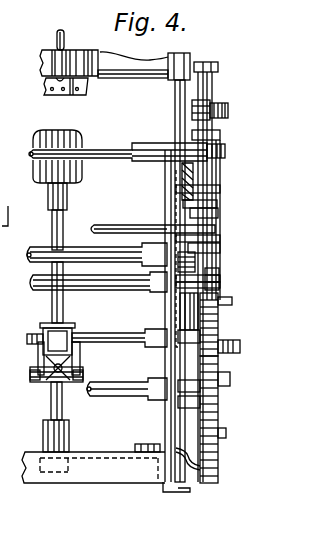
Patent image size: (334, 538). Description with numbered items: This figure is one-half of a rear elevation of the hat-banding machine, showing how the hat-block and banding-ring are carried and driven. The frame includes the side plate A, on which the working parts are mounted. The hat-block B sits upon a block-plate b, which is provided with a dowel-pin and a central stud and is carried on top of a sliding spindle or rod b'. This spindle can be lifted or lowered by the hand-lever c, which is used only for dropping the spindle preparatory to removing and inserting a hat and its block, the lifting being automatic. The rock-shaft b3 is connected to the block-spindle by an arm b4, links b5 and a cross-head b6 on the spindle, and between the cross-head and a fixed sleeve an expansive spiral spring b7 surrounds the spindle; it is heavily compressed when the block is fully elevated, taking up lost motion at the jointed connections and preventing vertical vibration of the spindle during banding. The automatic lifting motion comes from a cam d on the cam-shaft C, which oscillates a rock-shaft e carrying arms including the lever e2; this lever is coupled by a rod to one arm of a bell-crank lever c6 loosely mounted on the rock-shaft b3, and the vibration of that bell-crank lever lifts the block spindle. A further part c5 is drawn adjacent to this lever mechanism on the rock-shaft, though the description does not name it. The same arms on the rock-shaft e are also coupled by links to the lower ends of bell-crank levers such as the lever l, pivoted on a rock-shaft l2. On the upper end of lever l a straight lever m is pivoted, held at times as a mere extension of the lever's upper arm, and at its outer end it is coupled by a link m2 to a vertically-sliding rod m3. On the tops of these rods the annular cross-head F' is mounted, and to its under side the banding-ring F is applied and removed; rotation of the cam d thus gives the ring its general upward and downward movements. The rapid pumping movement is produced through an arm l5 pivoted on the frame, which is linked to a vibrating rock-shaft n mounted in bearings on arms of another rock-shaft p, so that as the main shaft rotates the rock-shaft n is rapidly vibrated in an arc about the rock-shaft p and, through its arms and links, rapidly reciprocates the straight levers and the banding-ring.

The banding-ring F is at (52, 89).
The annular cross-head F' is at (104, 54).
The vertically-sliding rods m3 is at (175, 105).
The straight lever m is at (208, 101).
The bell-crank lever l is at (207, 135).
The rock-shaft l2 is at (127, 144).
The hat-block B is at (57, 148).
The block-plate b is at (74, 196).
The sliding spindle or rod b' is at (67, 230).
The hand-lever c is at (8, 215).
The vibrating rock-shaft n is at (153, 220).
The rock-shaft p is at (88, 250).
The arm l5 is at (84, 282).
The rock-shaft e is at (78, 292).
The arm b4 is at (46, 329).
The rock-shaft b3 is at (97, 332).
The links b5 is at (38, 358).
The expansive spiral spring b7 is at (32, 374).
The cross-head b6 is at (48, 383).
The cam-shaft C is at (127, 383).
The gear c5 is at (206, 273).
The arm or lever e2 is at (194, 284).
The bell-crank lever c6 is at (220, 320).
The links m2 is at (221, 178).
The cam d is at (212, 441).
The side plate A is at (176, 492).